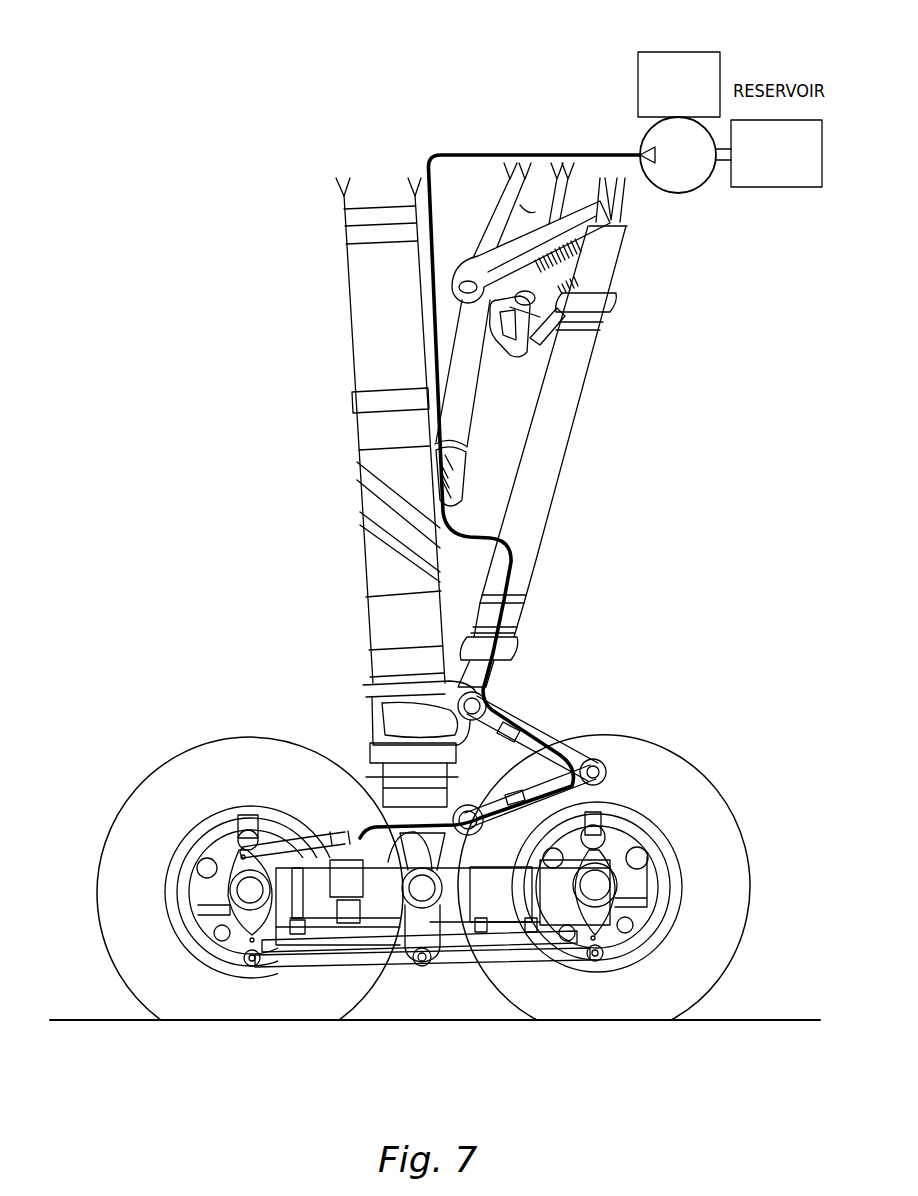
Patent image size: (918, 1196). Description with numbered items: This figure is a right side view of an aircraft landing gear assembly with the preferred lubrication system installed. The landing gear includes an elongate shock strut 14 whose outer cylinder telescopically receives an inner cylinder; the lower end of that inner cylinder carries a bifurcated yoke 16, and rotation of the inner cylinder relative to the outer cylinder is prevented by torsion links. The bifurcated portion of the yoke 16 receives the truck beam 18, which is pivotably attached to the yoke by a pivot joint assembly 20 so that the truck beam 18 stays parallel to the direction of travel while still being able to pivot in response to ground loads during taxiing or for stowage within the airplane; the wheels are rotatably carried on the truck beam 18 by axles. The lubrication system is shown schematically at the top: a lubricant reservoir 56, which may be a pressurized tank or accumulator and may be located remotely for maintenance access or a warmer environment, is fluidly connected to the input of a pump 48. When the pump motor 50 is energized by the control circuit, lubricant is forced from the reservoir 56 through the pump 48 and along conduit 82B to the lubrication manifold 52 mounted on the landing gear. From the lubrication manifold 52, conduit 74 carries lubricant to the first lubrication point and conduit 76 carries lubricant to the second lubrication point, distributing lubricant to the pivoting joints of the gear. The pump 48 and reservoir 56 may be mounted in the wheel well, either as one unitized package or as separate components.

The shock strut 14 is at (377, 513).
The bifurcated yoke 16 is at (423, 850).
The truck beam 18 is at (217, 921).
The pivot joint assembly 20 is at (428, 900).
The pump 48 is at (641, 142).
The pump motor 50 is at (790, 188).
The lubrication manifold 52 is at (335, 848).
The lubricant reservoir 56 is at (662, 52).
The conduit 74 is at (440, 882).
The conduit 76 is at (422, 897).
The conduit 82B is at (510, 567).